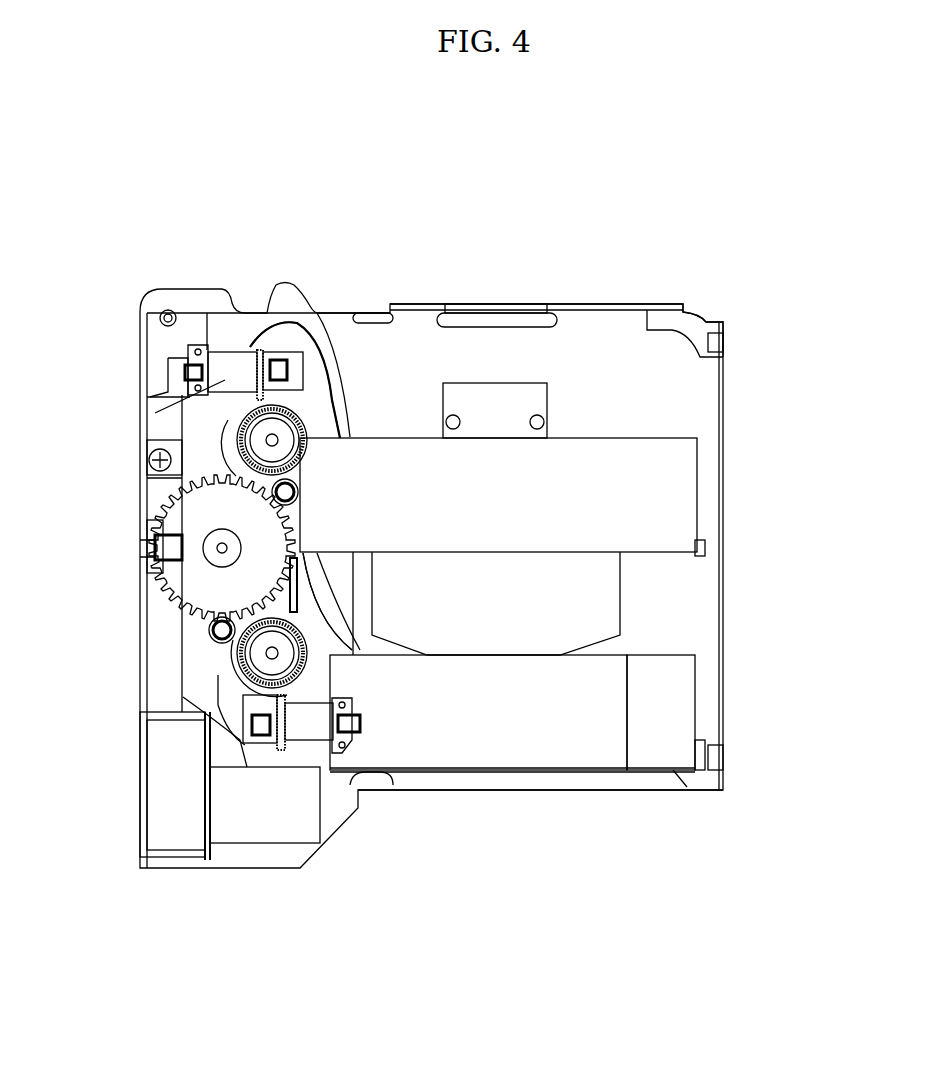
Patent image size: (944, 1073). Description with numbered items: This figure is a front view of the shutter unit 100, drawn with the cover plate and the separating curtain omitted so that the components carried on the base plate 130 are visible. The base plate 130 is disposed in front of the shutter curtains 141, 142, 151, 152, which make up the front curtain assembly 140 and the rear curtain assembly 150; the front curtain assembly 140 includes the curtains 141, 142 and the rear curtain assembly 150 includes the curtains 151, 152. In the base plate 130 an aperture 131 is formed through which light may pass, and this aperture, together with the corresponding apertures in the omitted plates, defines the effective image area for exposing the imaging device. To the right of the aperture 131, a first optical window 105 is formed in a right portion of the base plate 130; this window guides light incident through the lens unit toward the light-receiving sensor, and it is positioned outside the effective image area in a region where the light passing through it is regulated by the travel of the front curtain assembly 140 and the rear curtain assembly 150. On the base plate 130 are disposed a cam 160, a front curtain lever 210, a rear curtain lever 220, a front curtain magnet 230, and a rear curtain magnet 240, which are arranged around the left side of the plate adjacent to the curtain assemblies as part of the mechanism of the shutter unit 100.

The shutter unit 100 is at (712, 258).
The first optical window 105 is at (707, 547).
The base plate 130 is at (650, 304).
The aperture 131 is at (595, 590).
The front curtain assembly 140 is at (512, 782).
The shutter curtain 141 is at (538, 750).
The shutter curtain 142 is at (660, 740).
The rear curtain assembly 150 is at (473, 418).
The shutter curtain 151 is at (312, 520).
The shutter curtain 152 is at (418, 470).
The cam 160 is at (205, 527).
The front curtain lever 210 is at (205, 650).
The rear curtain lever 220 is at (205, 460).
The front curtain magnet 230 is at (302, 740).
The rear curtain magnet 240 is at (237, 350).